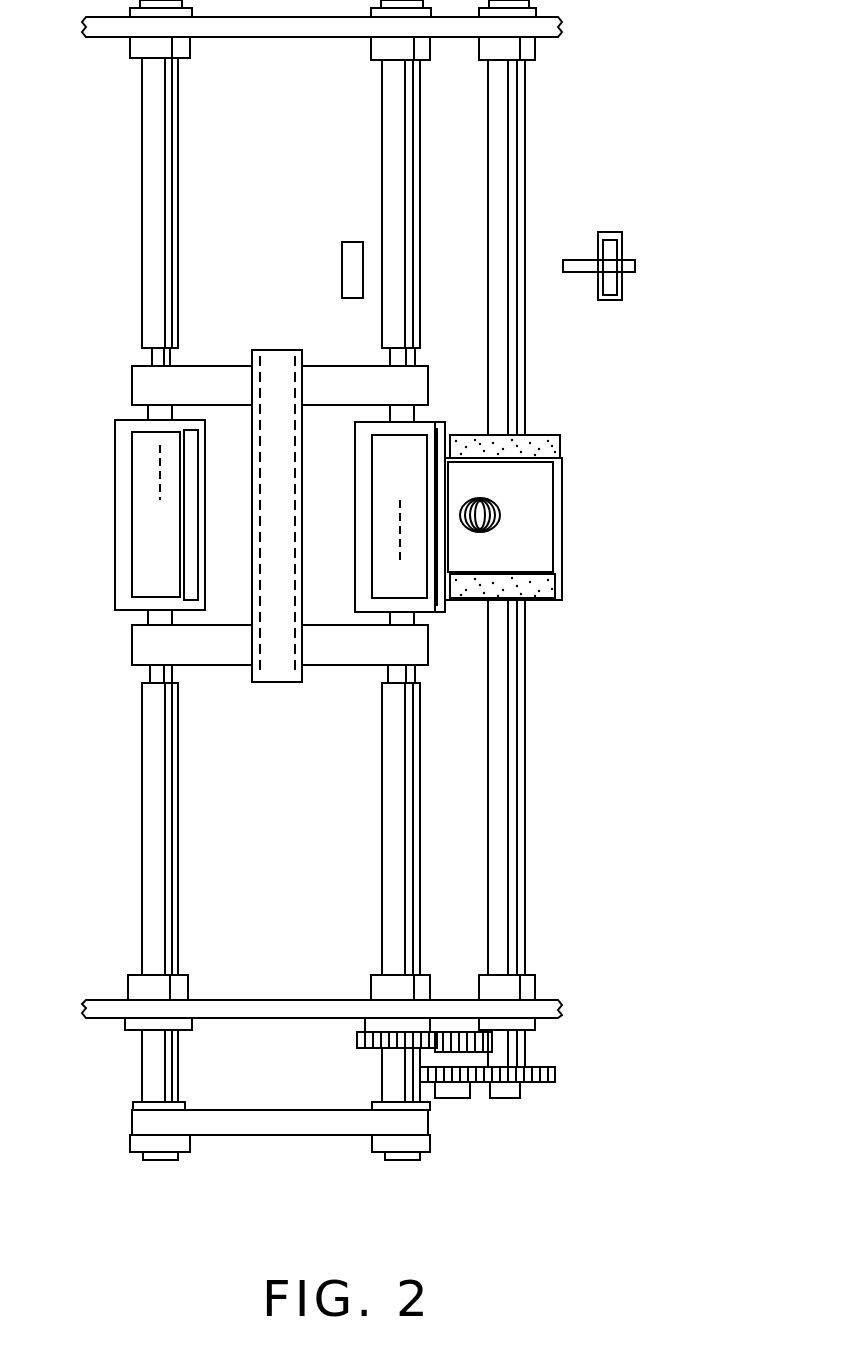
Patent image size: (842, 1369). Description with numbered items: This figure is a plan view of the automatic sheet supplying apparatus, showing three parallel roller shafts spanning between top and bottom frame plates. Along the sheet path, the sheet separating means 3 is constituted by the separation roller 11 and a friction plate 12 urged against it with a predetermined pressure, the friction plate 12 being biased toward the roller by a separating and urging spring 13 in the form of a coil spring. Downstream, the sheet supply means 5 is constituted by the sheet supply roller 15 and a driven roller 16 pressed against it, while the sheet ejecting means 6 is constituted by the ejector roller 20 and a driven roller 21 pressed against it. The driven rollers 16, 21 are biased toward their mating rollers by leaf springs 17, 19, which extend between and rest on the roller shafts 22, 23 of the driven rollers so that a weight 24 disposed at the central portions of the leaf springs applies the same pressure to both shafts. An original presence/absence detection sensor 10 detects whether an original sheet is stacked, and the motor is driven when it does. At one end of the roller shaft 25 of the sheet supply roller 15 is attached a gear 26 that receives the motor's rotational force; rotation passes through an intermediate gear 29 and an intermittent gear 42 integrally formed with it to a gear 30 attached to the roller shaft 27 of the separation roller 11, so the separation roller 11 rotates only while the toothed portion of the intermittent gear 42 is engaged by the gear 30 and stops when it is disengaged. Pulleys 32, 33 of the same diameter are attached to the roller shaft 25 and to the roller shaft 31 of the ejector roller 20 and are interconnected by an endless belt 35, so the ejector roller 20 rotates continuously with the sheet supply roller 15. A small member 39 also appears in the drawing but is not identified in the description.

The sheet separating means 3 is at (546, 514).
The sheet supply means 5 is at (280, 518).
The sheet ejecting means 6 is at (113, 508).
The original presence/absence detection sensor 10 is at (628, 262).
The separation roller 11 is at (545, 445).
The friction plate 12 is at (535, 537).
The separating and urging spring 13 is at (505, 518).
The sheet supply roller 15 is at (443, 432).
The driven roller 16 is at (400, 470).
The leaf spring 17 is at (224, 650).
The leaf spring 19 is at (213, 380).
The ejector roller 20 is at (122, 598).
The driven roller 21 is at (145, 520).
The roller shaft 22 is at (406, 352).
The roller shaft 23 is at (158, 352).
The weight 24 is at (290, 545).
The roller shaft 25 is at (400, 912).
The gear 26 is at (365, 1036).
The roller shaft 27 is at (510, 822).
The intermediate gear 29 is at (495, 1047).
The gear 30 is at (552, 1077).
The roller shaft 31 is at (160, 950).
The pulley 32 is at (420, 1160).
The pulley 33 is at (145, 1160).
The endless belt 35 is at (282, 1135).
The stop pin 39 is at (352, 262).
The intermittent gear 42 is at (445, 1085).